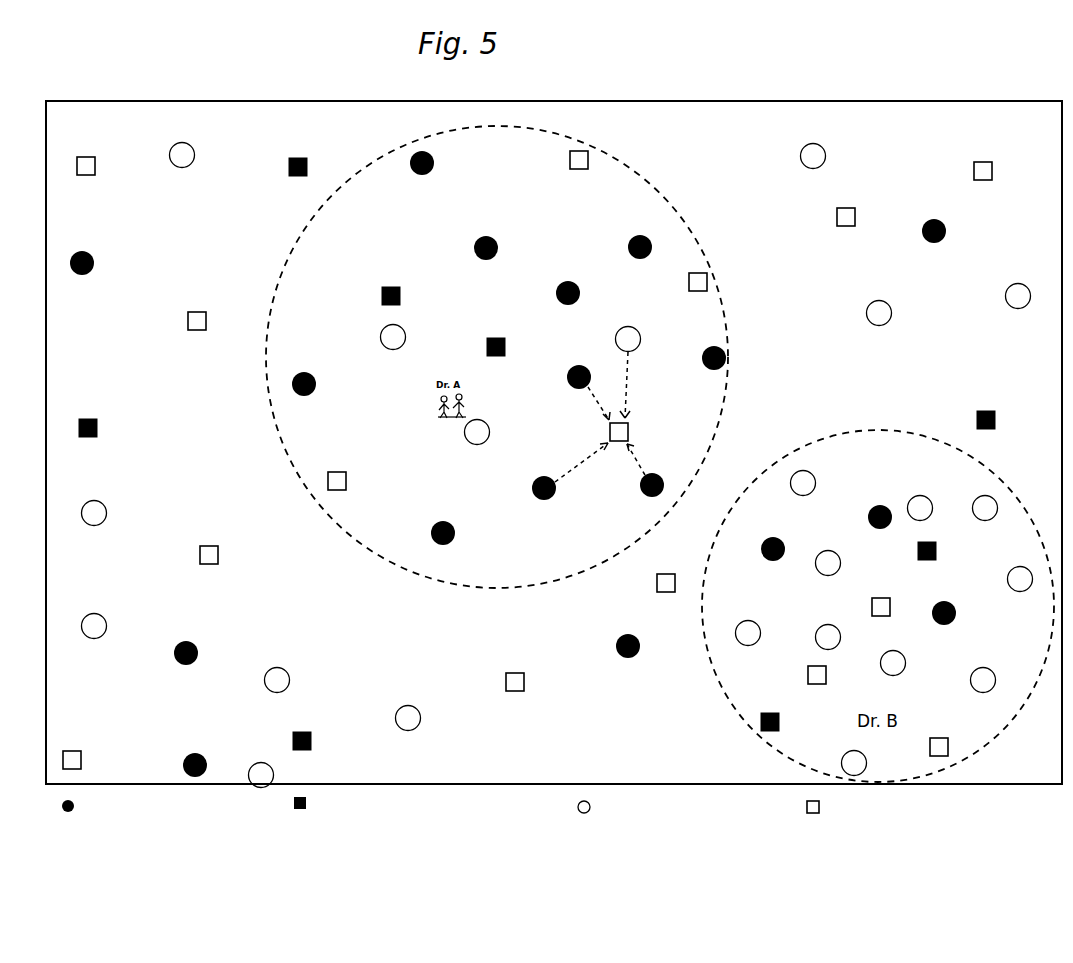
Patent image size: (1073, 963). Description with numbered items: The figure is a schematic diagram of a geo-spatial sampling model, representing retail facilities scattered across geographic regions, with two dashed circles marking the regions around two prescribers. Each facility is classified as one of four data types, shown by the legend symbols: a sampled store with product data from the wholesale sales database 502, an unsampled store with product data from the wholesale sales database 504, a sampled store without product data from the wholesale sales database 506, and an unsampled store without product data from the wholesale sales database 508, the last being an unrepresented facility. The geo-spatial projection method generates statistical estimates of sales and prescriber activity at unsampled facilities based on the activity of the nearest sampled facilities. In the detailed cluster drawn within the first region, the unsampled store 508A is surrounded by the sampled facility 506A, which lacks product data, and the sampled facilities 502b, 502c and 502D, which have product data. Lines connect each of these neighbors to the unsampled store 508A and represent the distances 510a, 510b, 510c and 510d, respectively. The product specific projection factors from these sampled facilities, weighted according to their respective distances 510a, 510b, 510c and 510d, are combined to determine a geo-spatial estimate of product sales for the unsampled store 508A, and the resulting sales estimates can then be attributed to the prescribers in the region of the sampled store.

The sampled store with product data from the wholesale sales database 502 is at (64, 813).
The unsampled store with product data from the wholesale sales database 504 is at (298, 812).
The sampled store without product data from the wholesale sales database 506 is at (582, 814).
The unsampled store without product data from the wholesale sales database 508 is at (812, 813).
The sampled facility 502b is at (581, 365).
The sampled facility 502c is at (542, 476).
The sampled facility 502D is at (640, 488).
The sampled facility 506A is at (650, 330).
The unsampled store 508A is at (632, 431).
The distance 510a is at (631, 385).
The distance 510b is at (602, 388).
The distance 510c is at (582, 462).
The distance 510d is at (637, 461).